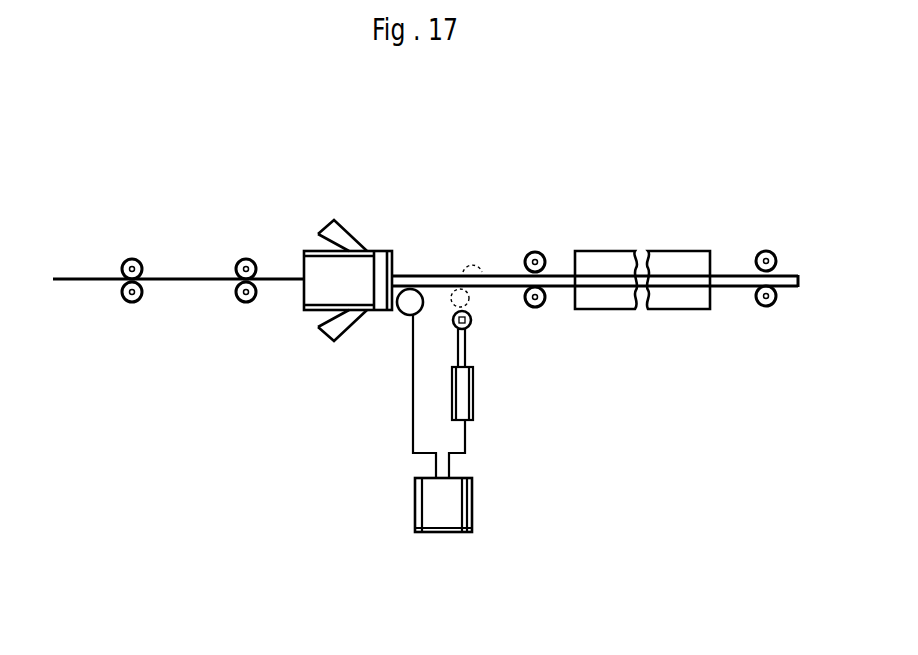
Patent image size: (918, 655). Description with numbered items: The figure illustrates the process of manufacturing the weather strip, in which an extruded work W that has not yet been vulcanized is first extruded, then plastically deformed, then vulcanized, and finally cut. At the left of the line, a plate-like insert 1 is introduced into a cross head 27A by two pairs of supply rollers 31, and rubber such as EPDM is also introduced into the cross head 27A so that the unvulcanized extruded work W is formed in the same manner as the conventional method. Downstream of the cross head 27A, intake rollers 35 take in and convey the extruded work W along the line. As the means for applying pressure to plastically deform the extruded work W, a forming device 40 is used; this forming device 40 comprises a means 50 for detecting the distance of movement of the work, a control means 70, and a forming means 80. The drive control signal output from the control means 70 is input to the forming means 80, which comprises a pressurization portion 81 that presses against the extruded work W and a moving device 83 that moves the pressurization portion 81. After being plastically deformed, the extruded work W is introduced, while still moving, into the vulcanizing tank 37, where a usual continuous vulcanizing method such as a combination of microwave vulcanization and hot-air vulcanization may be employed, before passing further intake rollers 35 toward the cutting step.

The plate-like insert 1 is at (184, 282).
The supply roller 31 is at (246, 257).
The cross head 27A is at (368, 250).
The extruded work W is at (435, 275).
The intake roller 35 is at (540, 251).
The vulcanizing tank 37 is at (668, 250).
The means for detecting distance of movement 50 is at (395, 318).
The pressurization portion 81 is at (476, 324).
The moving device 83 is at (476, 378).
The forming means 80 is at (541, 320).
The control means 70 is at (413, 509).
The forming device 40 is at (501, 464).